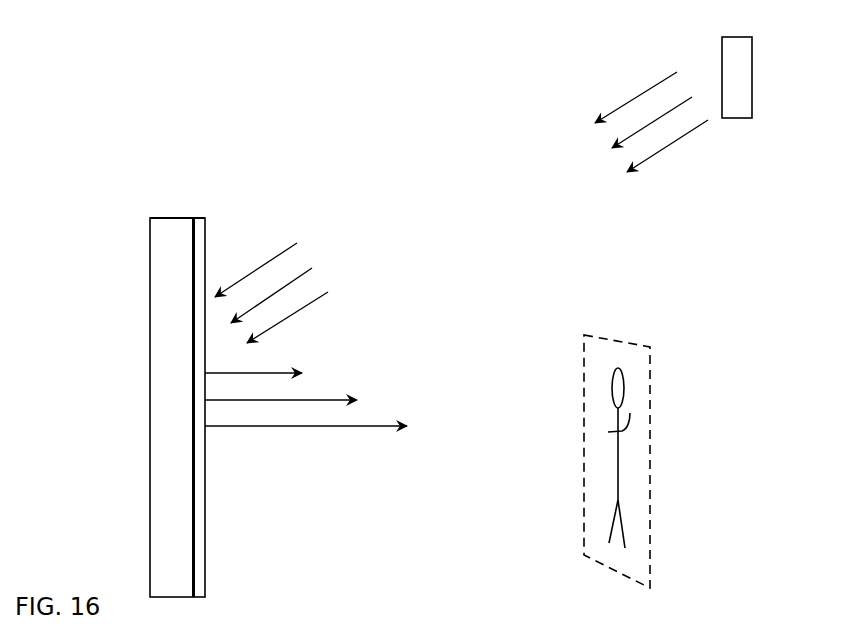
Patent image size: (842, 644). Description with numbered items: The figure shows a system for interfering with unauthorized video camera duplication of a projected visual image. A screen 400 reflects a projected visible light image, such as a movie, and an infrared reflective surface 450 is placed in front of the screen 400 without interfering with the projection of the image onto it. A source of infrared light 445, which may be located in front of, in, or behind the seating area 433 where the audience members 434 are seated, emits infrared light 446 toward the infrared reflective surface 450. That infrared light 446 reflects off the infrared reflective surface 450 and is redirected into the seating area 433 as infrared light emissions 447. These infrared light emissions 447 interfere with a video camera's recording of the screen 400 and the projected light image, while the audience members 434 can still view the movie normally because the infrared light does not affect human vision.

The screen 400 is at (160, 222).
The infrared reflective surface 450 is at (198, 223).
The infrared light 446 is at (278, 255).
The infrared light emissions 447 is at (282, 372).
The source of infrared light 445 is at (752, 75).
The seating area 433 is at (612, 337).
The audience members 434 is at (623, 396).